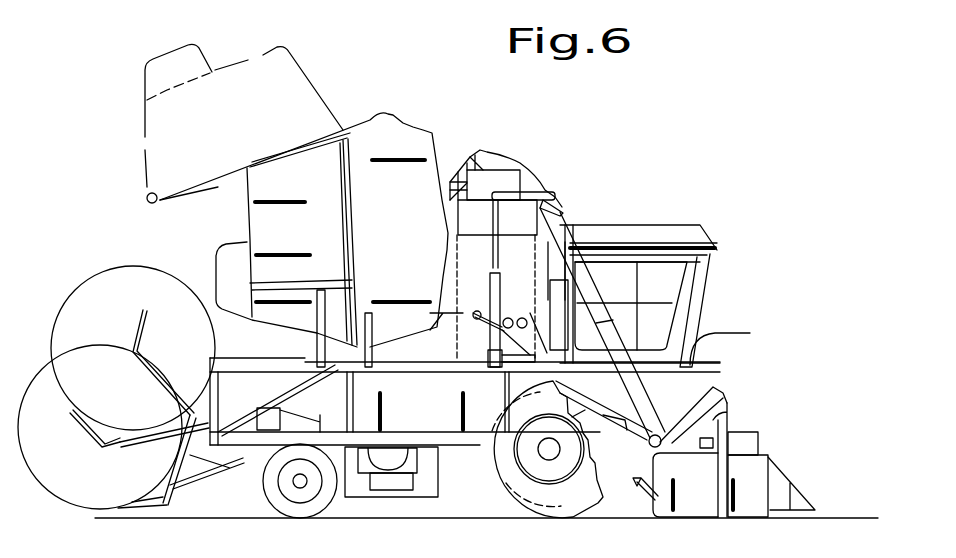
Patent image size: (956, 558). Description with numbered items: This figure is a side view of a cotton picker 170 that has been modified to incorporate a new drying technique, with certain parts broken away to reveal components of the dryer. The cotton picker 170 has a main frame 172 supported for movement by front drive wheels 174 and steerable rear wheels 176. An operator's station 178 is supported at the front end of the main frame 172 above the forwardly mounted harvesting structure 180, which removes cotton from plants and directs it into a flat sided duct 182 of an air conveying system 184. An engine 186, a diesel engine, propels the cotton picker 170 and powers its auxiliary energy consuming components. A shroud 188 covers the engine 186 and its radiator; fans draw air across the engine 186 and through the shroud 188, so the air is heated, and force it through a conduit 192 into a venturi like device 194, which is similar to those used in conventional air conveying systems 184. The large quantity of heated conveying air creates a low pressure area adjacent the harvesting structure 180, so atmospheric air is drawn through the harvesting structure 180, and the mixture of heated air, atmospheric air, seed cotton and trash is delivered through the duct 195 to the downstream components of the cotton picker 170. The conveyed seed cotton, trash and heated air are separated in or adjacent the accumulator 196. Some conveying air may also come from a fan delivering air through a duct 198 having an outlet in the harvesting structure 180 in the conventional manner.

The cotton picker 170 is at (660, 197).
The main frame 172 is at (690, 360).
The front drive wheels 174 is at (507, 495).
The steerable rear wheels 176 is at (345, 502).
The operator's station 178 is at (716, 247).
The harvesting structure 180 is at (791, 470).
The flat sided duct 182 is at (653, 396).
The air conveying system 184 is at (568, 203).
The engine 186 is at (412, 482).
The shroud 188 is at (347, 495).
The conduit 192 is at (570, 413).
The venturi like device 194 is at (650, 446).
The duct 195 is at (562, 219).
The accumulator 196 is at (465, 157).
The duct 198 is at (552, 272).